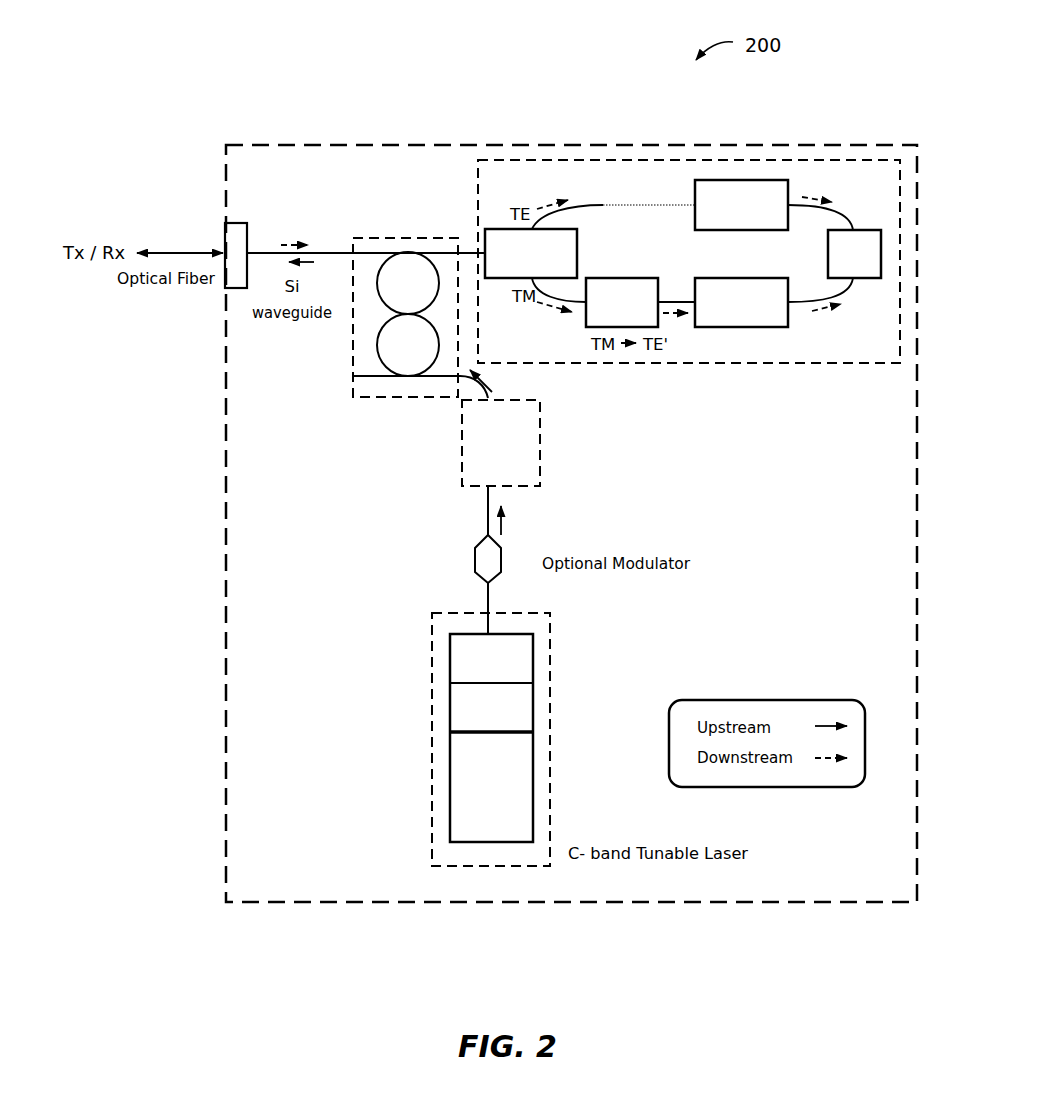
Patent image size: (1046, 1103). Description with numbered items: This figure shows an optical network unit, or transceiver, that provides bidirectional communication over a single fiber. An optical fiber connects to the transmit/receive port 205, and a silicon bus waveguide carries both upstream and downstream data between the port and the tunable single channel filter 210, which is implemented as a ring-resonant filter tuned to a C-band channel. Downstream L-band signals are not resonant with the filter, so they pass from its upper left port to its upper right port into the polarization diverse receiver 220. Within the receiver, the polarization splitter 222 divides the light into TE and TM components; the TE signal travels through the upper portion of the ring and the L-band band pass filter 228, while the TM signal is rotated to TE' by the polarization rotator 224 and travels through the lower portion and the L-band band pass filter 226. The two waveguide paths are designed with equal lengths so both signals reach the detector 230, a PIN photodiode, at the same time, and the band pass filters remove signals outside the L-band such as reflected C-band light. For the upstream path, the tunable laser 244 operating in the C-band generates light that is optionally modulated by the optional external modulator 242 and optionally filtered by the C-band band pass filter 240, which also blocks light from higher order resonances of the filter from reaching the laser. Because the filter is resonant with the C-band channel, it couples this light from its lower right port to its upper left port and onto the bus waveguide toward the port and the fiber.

The transmit/receive port 205 is at (247, 236).
The tunable single channel filter 210 is at (393, 238).
The polarization diverse receiver 220 is at (733, 363).
The polarization splitter 222 is at (502, 228).
The polarization rotator 224 is at (607, 278).
The L-band band pass filter 226 is at (692, 278).
The L-band band pass filter 228 is at (695, 193).
The detector 230 is at (828, 262).
The C-band band pass filter 240 is at (540, 432).
The optional external modulator 242 is at (501, 558).
The tunable laser 244 is at (550, 713).